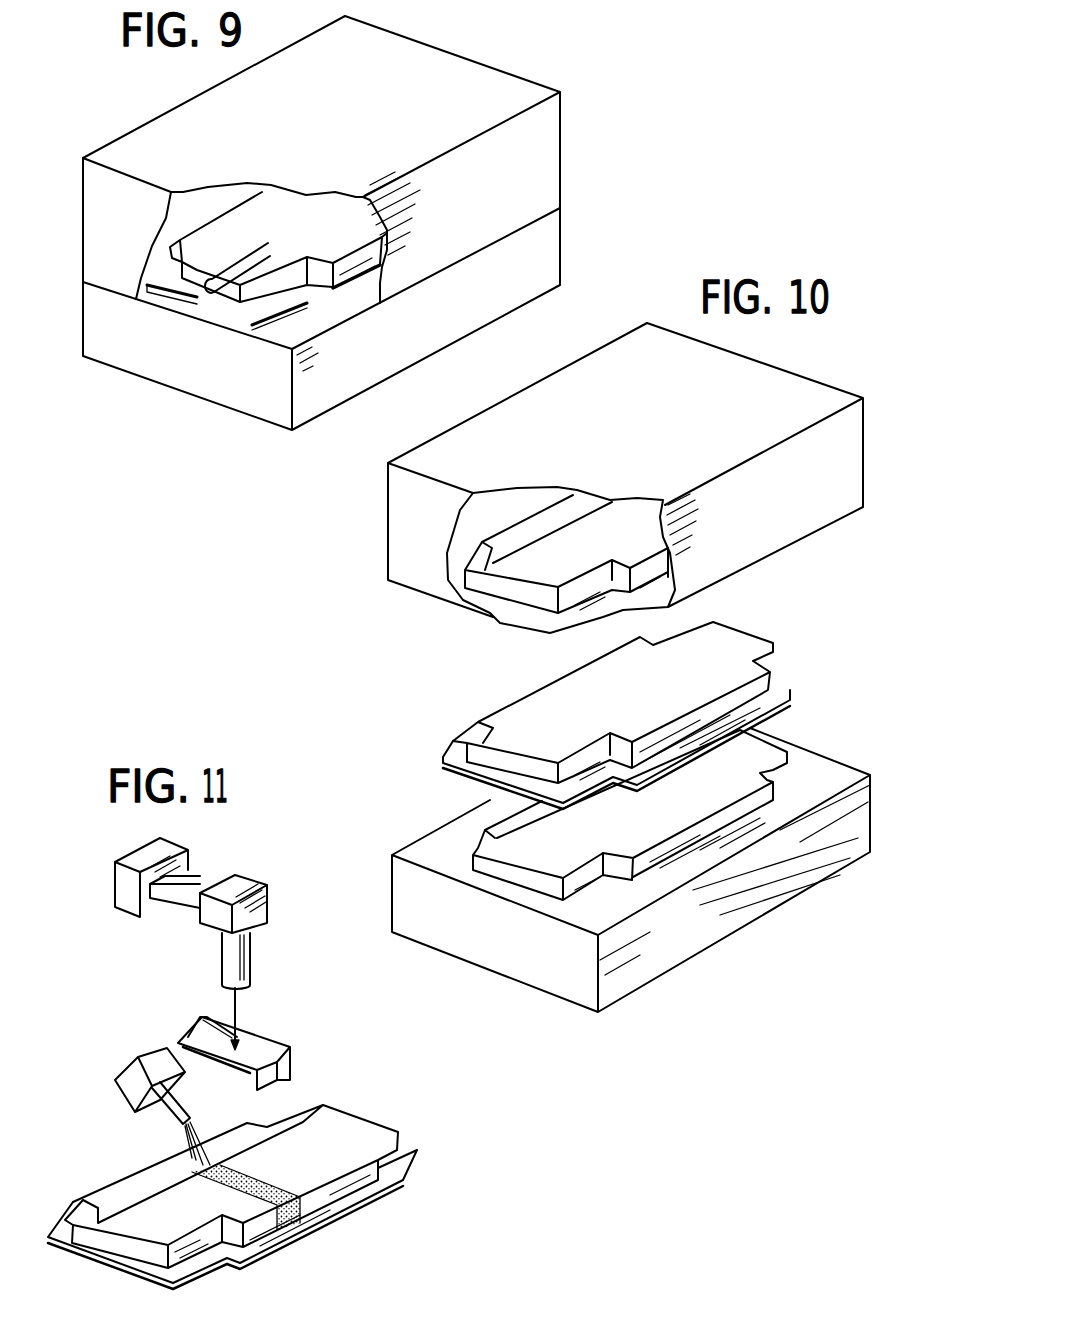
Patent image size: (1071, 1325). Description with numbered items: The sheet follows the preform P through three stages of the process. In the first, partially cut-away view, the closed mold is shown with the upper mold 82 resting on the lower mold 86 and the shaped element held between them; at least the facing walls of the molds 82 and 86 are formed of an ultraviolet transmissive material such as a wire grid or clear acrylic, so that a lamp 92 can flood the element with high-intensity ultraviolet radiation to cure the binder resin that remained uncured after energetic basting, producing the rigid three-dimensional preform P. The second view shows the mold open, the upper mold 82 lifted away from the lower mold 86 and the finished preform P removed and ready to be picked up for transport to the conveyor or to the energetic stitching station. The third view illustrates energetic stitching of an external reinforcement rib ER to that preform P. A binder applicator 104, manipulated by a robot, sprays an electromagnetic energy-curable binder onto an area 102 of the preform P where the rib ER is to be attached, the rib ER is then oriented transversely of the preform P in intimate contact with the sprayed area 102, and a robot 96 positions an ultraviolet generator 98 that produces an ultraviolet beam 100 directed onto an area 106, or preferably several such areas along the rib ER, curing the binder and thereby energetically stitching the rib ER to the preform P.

In FIG. 9, the upper mold 82 is at (132, 157).
In FIG. 10, the upper mold 82 is at (407, 547).
In FIG. 9, the mold 86 is at (155, 370).
In FIG. 10, the mold 86 is at (438, 930).
In FIG. 9, the lamp 92 is at (234, 276).
In FIG. 11, the robot 96 is at (236, 872).
In FIG. 11, the ultraviolet generator 98 is at (228, 948).
In FIG. 11, the ultraviolet beam 100 is at (232, 1018).
In FIG. 11, the area 102 is at (268, 1184).
In FIG. 11, the binder applicator 104 is at (130, 1078).
In FIG. 11, the area 106 is at (237, 1037).
In FIG. 9, the preform P is at (338, 247).
In FIG. 10, the preform P is at (647, 716).
In FIG. 11, the preform P is at (350, 1132).
In FIG. 11, the external reinforcement rib ER is at (298, 1068).